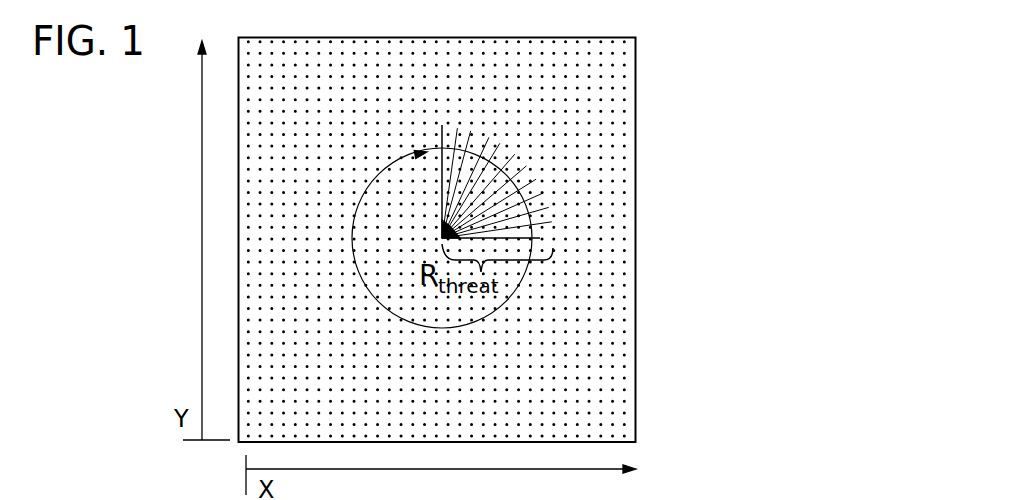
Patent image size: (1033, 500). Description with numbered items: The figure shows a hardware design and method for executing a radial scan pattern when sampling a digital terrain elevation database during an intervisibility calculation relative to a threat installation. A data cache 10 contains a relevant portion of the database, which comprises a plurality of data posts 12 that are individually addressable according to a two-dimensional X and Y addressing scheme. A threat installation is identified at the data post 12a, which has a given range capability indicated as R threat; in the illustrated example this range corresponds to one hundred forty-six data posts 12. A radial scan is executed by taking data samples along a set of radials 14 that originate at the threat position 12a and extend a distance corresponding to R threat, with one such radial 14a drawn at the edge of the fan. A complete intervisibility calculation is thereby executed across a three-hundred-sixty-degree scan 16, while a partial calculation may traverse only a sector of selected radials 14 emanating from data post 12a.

The data cache 10 is at (648, 346).
The data posts 12 is at (590, 287).
The data post 12a is at (437, 241).
The radials 14 is at (438, 112).
The edge search ray 14a is at (440, 136).
The 360° scan 16 is at (365, 190).